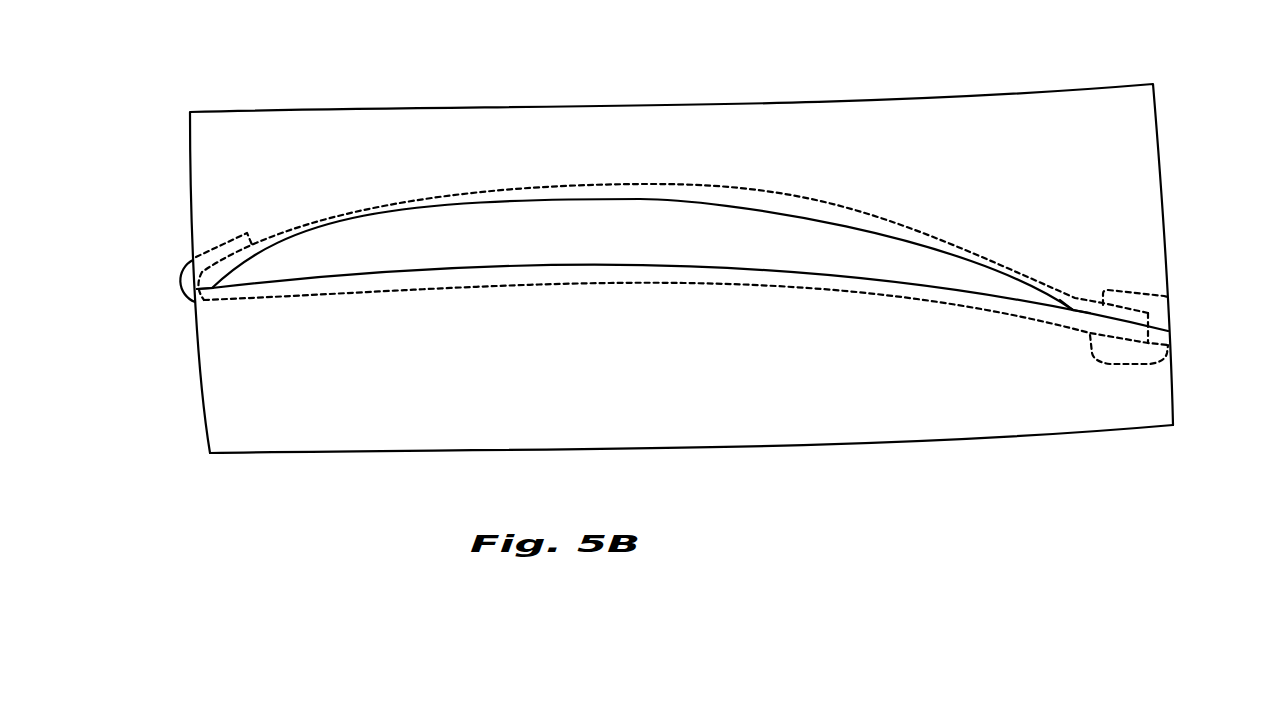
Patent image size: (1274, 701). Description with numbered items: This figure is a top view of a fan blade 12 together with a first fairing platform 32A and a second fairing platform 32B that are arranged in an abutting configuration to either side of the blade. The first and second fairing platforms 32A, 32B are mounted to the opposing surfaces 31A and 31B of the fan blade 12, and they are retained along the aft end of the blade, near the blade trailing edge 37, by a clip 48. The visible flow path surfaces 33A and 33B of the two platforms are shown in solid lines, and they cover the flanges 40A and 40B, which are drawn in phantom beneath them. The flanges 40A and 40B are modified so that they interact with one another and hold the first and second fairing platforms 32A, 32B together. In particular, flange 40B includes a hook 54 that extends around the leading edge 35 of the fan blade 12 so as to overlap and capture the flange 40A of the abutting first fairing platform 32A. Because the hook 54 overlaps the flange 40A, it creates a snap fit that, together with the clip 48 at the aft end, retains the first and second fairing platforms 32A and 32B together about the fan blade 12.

The fan blade 12 is at (682, 238).
The surface of fan blade 31A is at (755, 207).
The surface of fan blade 31B is at (737, 268).
The first fairing platform 32A is at (1108, 102).
The second fairing platform 32B is at (1023, 445).
The flow path surface 33A is at (1042, 164).
The flow path surface 33B is at (930, 395).
The leading edge 35 is at (212, 290).
The trailing edge 37 is at (1077, 306).
The flange 40A is at (652, 184).
The flange 40B is at (468, 290).
The clip 48 is at (1172, 345).
The hook 54 is at (178, 270).